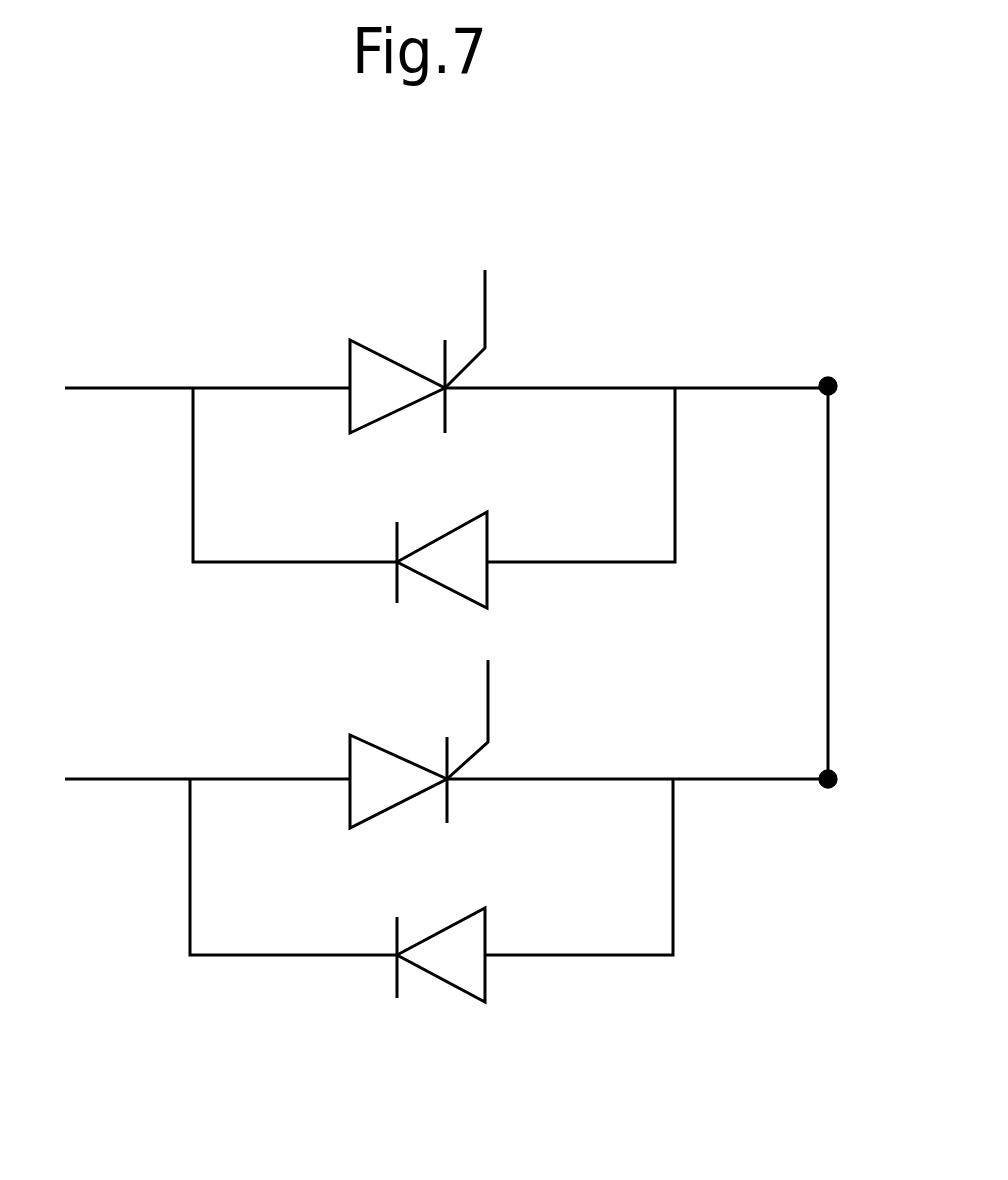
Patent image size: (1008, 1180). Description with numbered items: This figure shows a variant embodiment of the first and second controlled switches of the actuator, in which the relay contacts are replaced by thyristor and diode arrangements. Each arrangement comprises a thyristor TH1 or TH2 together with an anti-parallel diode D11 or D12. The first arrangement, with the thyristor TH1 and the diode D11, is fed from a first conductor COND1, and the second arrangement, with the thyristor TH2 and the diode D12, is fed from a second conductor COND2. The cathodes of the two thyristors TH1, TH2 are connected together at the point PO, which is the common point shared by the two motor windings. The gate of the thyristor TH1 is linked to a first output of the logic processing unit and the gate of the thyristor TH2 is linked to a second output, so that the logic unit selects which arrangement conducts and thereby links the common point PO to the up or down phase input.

The thyristor TH1 is at (407, 351).
The thyristor TH2 is at (415, 744).
The anti-parallel diode D11 is at (434, 506).
The anti-parallel diode D12 is at (431, 895).
The first conductor COND1 is at (446, 362).
The second conductor COND2 is at (446, 756).
The common point shared by the two windings PO is at (864, 582).